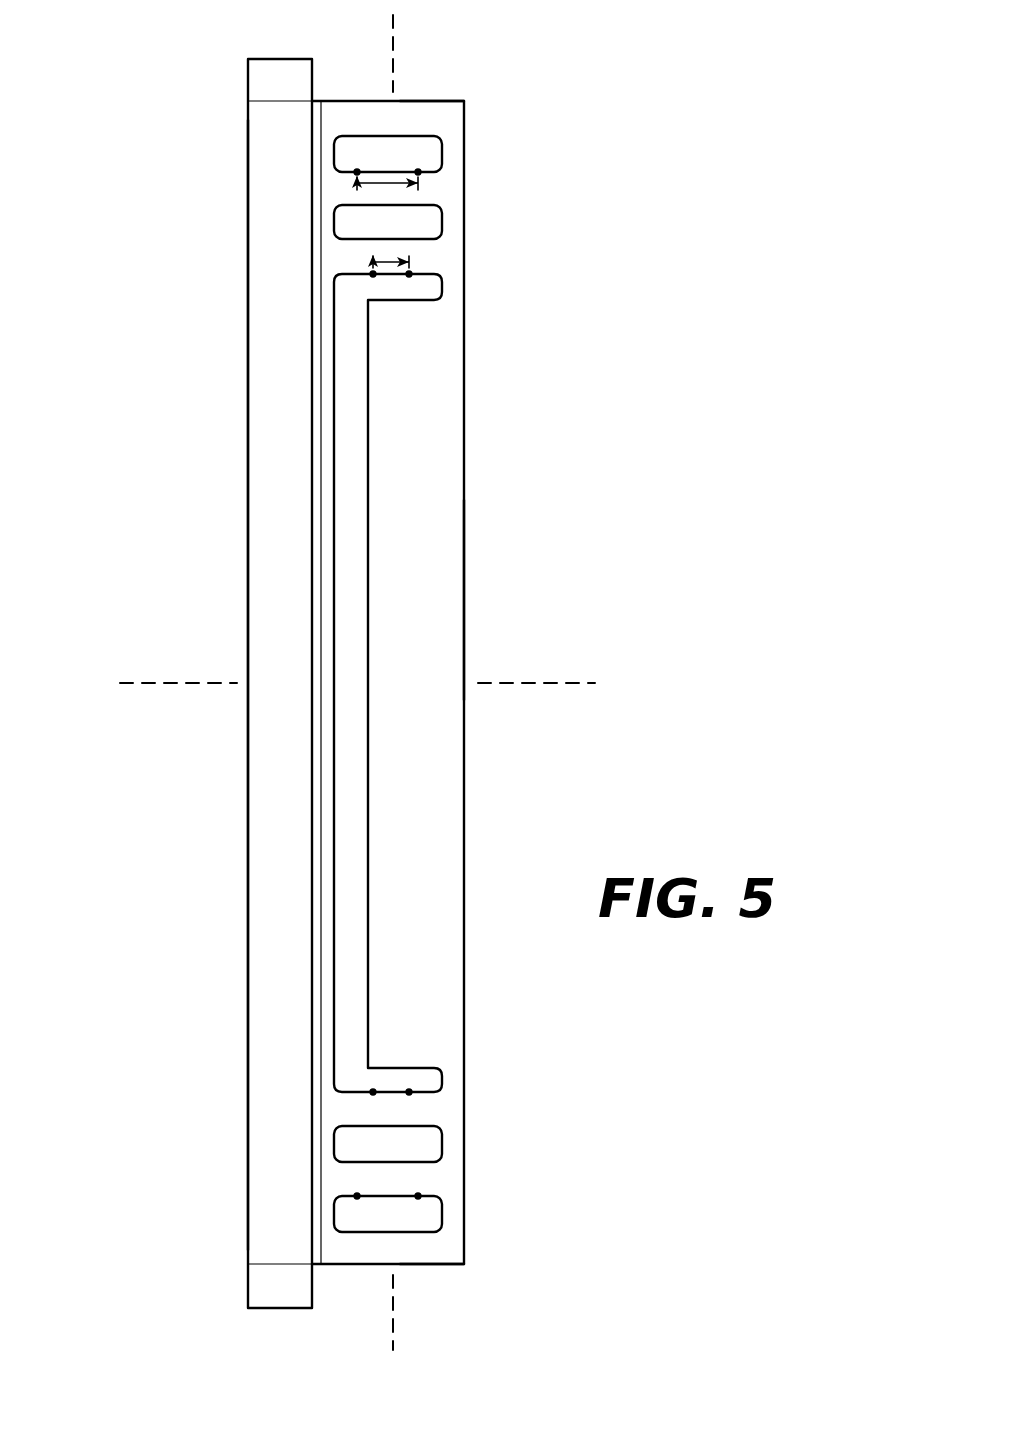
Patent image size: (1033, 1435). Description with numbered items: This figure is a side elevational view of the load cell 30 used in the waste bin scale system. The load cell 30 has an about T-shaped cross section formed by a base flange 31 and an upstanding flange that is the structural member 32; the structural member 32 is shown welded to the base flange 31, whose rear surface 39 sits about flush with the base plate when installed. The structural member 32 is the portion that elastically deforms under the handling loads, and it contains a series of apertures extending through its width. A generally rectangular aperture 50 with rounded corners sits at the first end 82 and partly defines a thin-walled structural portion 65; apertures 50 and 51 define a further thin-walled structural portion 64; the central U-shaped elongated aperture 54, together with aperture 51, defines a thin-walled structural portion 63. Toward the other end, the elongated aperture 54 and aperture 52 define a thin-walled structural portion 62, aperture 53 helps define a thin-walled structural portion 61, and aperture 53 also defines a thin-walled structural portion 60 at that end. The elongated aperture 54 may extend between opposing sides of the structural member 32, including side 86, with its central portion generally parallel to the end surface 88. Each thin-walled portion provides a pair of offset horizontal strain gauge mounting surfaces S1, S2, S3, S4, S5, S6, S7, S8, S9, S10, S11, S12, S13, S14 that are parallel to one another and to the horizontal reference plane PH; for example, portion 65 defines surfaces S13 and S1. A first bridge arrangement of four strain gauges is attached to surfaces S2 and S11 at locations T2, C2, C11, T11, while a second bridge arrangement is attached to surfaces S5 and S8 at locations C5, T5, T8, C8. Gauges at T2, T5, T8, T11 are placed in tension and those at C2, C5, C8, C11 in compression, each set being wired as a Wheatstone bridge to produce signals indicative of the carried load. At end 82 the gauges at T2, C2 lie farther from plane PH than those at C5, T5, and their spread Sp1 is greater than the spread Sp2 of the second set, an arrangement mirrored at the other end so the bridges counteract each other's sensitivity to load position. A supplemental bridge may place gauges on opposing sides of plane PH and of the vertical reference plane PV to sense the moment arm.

The load cell 30 is at (106, 50).
The base flange 31 is at (265, 125).
The structural member 32 is at (430, 444).
The rear surface of the base flange 39 is at (244, 455).
The aperture 50 is at (430, 157).
The aperture 51 is at (430, 224).
The aperture 52 is at (430, 1140).
The aperture 53 is at (430, 1210).
The elongated aperture 54 is at (356, 726).
The thin-walled structural portion 60 is at (377, 1266).
The thin-walled structural portion 61 is at (368, 1170).
The thin-walled structural portion 62 is at (368, 1115).
The thin-walled structural portion 63 is at (368, 250).
The thin-walled structural portion 64 is at (365, 192).
The thin-walled structural portion 65 is at (377, 117).
The first end of the structural member 82 is at (402, 101).
The side of the structural member 86 is at (432, 650).
The end surface of the structural member 88 is at (469, 600).
The horizontal strain gauge mounting surface S1 is at (372, 141).
The horizontal strain gauge mounting surface S2 is at (390, 168).
The horizontal strain gauge mounting surface S3 is at (372, 210).
The horizontal strain gauge mounting surface S4 is at (390, 235).
The horizontal strain gauge mounting surface S5 is at (356, 281).
The horizontal strain gauge mounting surface S6 is at (405, 293).
The horizontal strain gauge mounting surface S7 is at (404, 1073).
The horizontal strain gauge mounting surface S8 is at (356, 1086).
The horizontal strain gauge mounting surface S9 is at (390, 1134).
The horizontal strain gauge mounting surface S10 is at (371, 1157).
The horizontal strain gauge mounting surface S11 is at (390, 1204).
The horizontal strain gauge mounting surface S12 is at (371, 1228).
The horizontal strain gauge mounting surface S13 is at (438, 99).
The horizontal strain gauge mounting surface S14 is at (438, 1266).
The strain gauge location T2 is at (355, 172).
The strain gauge location T5 is at (411, 274).
The strain gauge location T8 is at (371, 1092).
The strain gauge location T11 is at (419, 1196).
The strain gauge location C2 is at (420, 172).
The strain gauge location C5 is at (371, 274).
The strain gauge location C8 is at (411, 1092).
The strain gauge location C11 is at (356, 1196).
The spread Sp1 is at (395, 184).
The spread Sp2 is at (410, 262).
The vertical reference plane PV is at (402, 46).
The horizontal reference plane PH is at (540, 684).